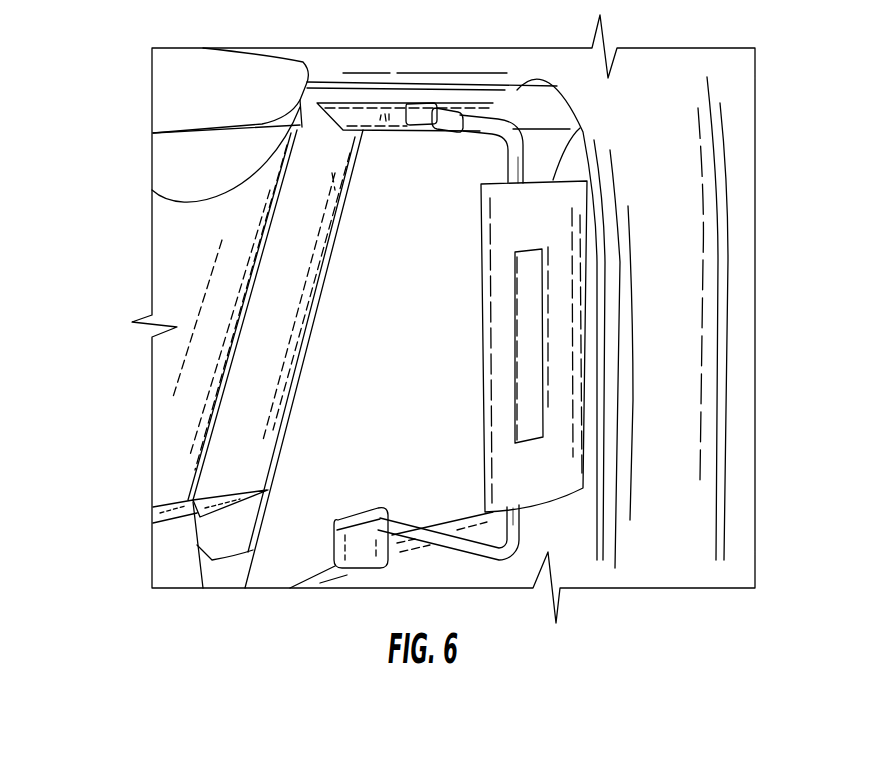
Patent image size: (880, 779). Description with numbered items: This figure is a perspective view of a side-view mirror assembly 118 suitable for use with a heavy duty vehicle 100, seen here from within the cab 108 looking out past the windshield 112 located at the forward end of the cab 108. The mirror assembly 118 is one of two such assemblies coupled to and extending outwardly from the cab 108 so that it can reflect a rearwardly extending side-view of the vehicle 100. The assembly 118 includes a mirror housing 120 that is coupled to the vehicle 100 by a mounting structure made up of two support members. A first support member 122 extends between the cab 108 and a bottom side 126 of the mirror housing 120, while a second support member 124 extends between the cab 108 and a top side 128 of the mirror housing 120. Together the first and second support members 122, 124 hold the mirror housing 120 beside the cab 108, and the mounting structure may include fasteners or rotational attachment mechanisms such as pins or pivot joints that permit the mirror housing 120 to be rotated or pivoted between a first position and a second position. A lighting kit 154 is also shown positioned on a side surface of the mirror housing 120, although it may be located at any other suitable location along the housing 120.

The heavy duty vehicle 100 is at (124, 96).
The cab 108 is at (709, 70).
The windshield 112 is at (182, 275).
The side-view mirror assembly 118 is at (622, 288).
The mirror housing 120 is at (540, 346).
The first support member 122 is at (432, 538).
The second support member 124 is at (500, 127).
The bottom side 126 is at (533, 512).
The top side 128 is at (553, 177).
The lighting kit 154 is at (525, 300).